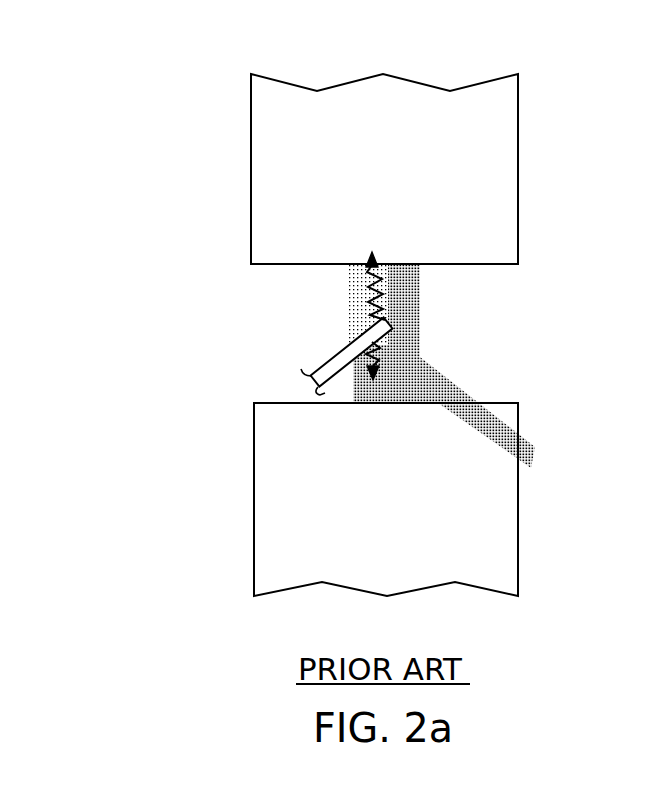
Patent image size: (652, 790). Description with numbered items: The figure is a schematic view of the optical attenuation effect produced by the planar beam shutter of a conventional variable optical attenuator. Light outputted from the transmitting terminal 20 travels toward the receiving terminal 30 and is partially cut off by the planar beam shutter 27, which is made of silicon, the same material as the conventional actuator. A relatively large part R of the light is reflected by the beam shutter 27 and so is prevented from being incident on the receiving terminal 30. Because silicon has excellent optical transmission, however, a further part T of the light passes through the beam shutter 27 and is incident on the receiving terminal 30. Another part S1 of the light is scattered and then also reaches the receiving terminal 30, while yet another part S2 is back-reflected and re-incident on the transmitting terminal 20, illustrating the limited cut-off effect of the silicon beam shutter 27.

The receiving terminal 30 is at (513, 163).
The transmitting terminal 20 is at (508, 547).
The planar beam shutter 27 is at (321, 368).
The transmitted part of light T is at (353, 307).
The scattered part of light S1 is at (383, 284).
The back-reflected part of light S2 is at (418, 355).
The reflected part of light R is at (457, 383).